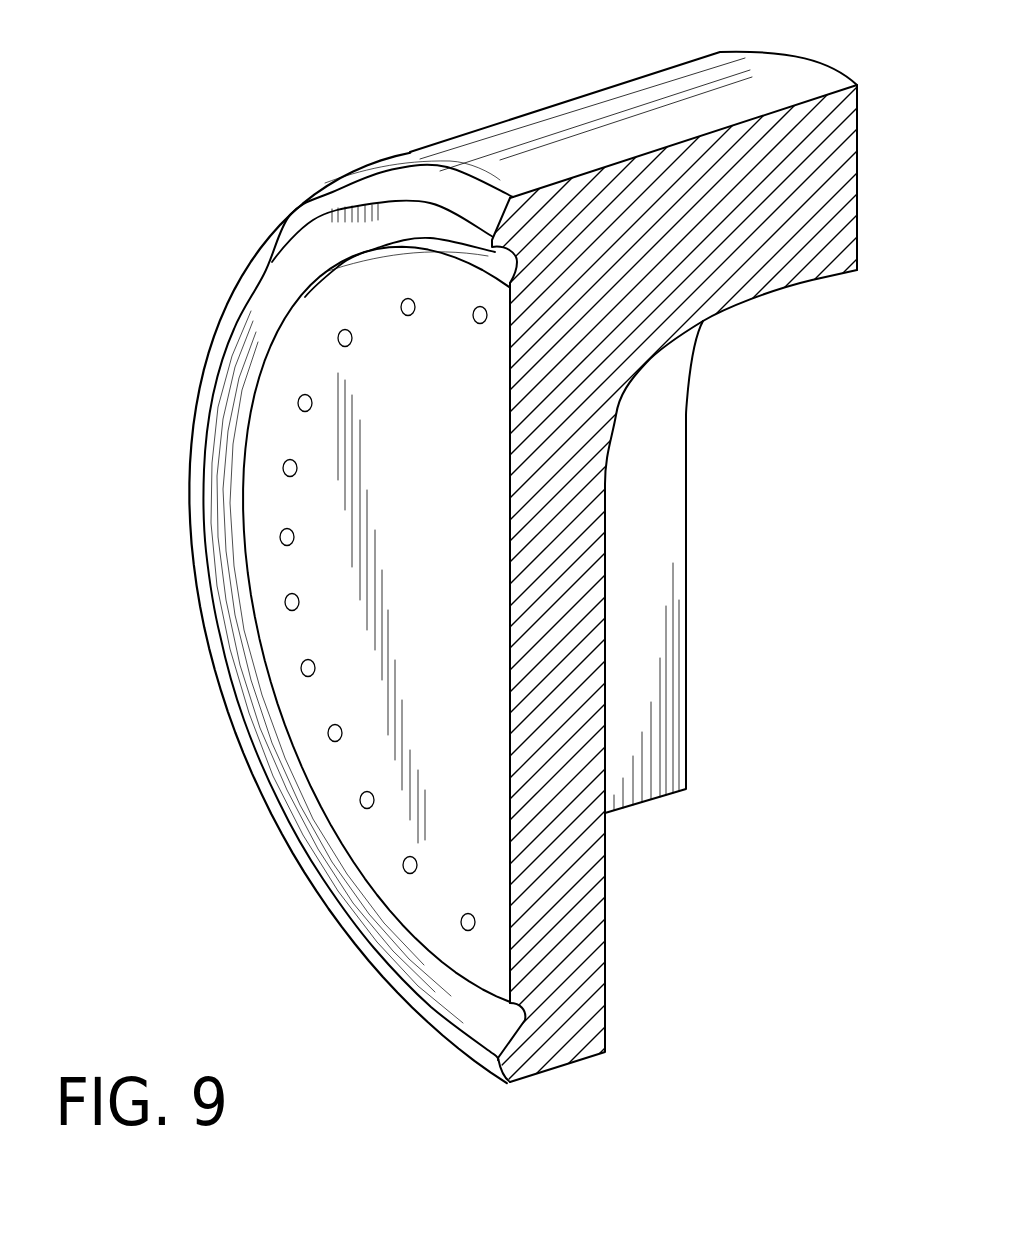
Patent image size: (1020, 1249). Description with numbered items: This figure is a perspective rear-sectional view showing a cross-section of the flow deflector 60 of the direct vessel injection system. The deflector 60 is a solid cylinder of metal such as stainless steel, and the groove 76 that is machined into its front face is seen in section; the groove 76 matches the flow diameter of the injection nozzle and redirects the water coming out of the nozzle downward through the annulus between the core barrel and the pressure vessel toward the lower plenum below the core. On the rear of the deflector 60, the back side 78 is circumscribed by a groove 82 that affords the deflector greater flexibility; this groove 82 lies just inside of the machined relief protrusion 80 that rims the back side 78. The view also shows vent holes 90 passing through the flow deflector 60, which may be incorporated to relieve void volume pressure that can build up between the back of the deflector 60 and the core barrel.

The flow deflector 60 is at (335, 103).
The groove 76 is at (666, 543).
The back side 78 is at (465, 603).
The machined relief protrusion 80 is at (220, 677).
The groove 82 is at (500, 1025).
The vent holes 90 is at (298, 403).